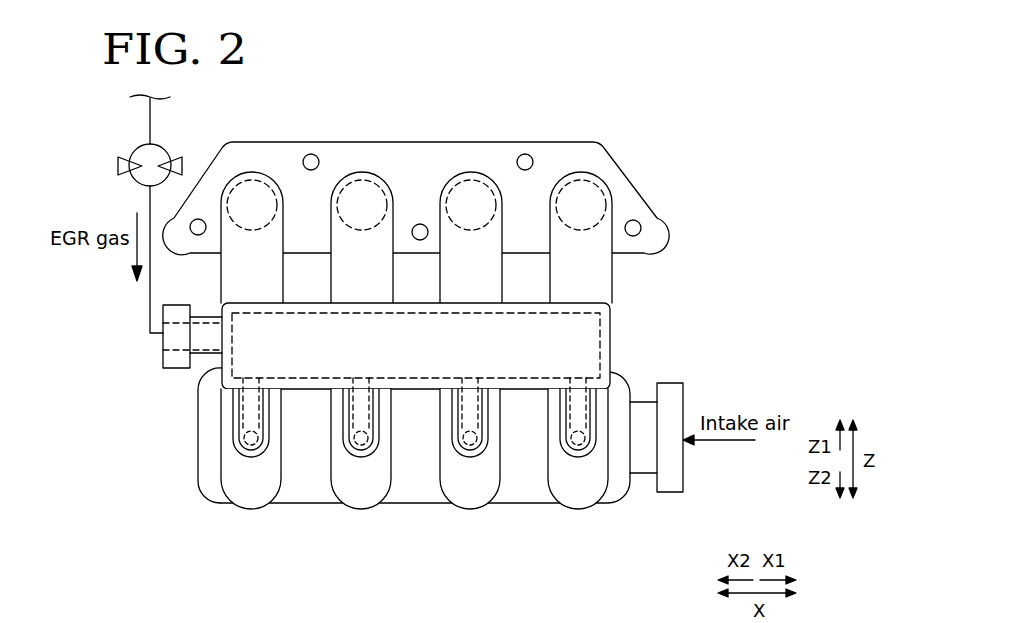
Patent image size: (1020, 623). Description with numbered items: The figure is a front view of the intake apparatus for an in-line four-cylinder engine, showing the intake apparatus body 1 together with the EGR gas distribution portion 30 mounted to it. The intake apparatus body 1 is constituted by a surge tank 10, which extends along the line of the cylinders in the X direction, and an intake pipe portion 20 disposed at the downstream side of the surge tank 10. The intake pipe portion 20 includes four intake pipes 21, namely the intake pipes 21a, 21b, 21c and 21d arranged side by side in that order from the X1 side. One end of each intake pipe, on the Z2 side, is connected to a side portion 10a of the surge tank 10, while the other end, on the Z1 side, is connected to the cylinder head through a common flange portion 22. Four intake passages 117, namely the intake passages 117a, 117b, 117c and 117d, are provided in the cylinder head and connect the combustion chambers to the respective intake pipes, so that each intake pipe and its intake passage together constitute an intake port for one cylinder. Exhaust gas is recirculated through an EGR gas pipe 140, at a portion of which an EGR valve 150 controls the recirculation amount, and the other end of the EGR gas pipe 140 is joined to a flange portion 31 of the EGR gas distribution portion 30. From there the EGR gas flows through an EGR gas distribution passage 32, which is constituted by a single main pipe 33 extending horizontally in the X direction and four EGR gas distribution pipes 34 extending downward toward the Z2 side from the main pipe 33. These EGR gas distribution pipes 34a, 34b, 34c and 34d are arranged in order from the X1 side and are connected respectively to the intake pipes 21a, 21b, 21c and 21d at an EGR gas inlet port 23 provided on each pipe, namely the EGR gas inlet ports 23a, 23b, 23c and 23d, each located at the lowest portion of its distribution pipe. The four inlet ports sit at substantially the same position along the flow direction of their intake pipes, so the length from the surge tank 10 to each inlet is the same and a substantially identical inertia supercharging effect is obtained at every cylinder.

The intake apparatus body 1 is at (689, 101).
The surge tank 10 is at (409, 429).
The side portion 10a is at (206, 432).
The intake pipe portion 20 is at (632, 268).
The intake pipes 21 is at (420, 498).
The intake pipe 21a is at (578, 511).
The intake pipe 21b is at (470, 511).
The intake pipe 21c is at (364, 511).
The intake pipe 21d is at (253, 511).
The flange portion 22 is at (551, 142).
The EGR gas inlet port 23 is at (420, 501).
The EGR gas inlet port 23a is at (596, 458).
The EGR gas inlet port 23b is at (482, 461).
The EGR gas inlet port 23c is at (370, 463).
The EGR gas inlet port 23d is at (250, 454).
The EGR gas distribution portion 30 is at (375, 357).
The flange portion 31 is at (170, 358).
The EGR gas distribution passage 32 is at (211, 388).
The main pipe 33 is at (606, 318).
The EGR gas distribution pipes 34 is at (420, 450).
The EGR gas distribution pipe 34a is at (590, 424).
The EGR gas distribution pipe 34b is at (492, 381).
The EGR gas distribution pipe 34c is at (350, 458).
The EGR gas distribution pipe 34d is at (247, 437).
The intake passages 117 is at (436, 203).
The intake passage 117a is at (584, 180).
The intake passage 117b is at (473, 180).
The intake passage 117c is at (364, 180).
The intake passage 117d is at (254, 180).
The EGR gas pipe 140 is at (148, 318).
The EGR valve 150 is at (148, 146).